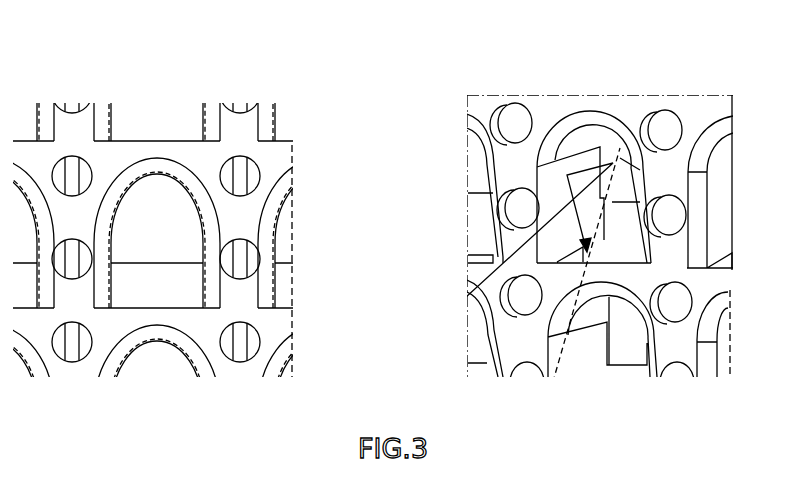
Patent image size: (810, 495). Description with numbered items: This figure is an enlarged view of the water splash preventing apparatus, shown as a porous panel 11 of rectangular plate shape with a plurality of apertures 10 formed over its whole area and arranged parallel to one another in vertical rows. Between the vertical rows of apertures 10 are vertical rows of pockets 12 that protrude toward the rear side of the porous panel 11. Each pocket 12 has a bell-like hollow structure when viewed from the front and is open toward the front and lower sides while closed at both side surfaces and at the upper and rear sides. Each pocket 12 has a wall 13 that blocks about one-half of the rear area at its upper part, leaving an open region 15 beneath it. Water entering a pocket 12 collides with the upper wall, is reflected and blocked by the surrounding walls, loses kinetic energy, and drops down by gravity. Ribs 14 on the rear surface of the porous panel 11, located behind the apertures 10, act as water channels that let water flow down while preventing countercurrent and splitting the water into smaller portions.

The aperture 10 is at (250, 177).
The porous panel 11 is at (145, 164).
The pocket 12 is at (179, 168).
The wall 13 is at (182, 228).
The rib 14 is at (238, 258).
The open region 15 is at (180, 293).